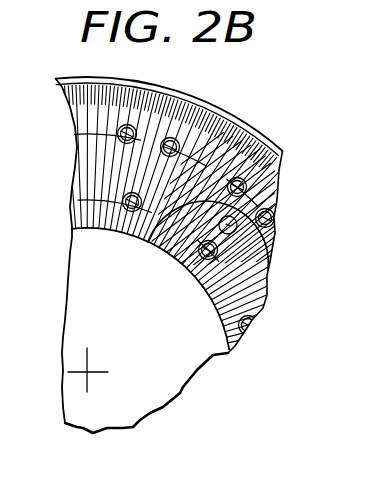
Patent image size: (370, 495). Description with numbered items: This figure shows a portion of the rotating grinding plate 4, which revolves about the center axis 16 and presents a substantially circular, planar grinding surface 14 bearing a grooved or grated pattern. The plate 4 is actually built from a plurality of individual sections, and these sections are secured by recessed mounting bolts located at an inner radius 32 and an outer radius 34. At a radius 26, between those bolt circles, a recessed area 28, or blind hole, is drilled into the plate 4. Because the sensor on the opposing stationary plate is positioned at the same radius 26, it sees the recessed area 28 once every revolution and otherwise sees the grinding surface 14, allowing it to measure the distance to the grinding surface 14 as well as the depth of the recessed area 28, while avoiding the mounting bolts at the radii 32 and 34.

The rotating plate 4 is at (125, 81).
The grinding surface 14 is at (217, 123).
The outer radius 34 is at (107, 131).
The inner radius 32 is at (148, 243).
The radius 26 is at (173, 258).
The recessed area 28 is at (264, 264).
The center axis 16 is at (97, 367).